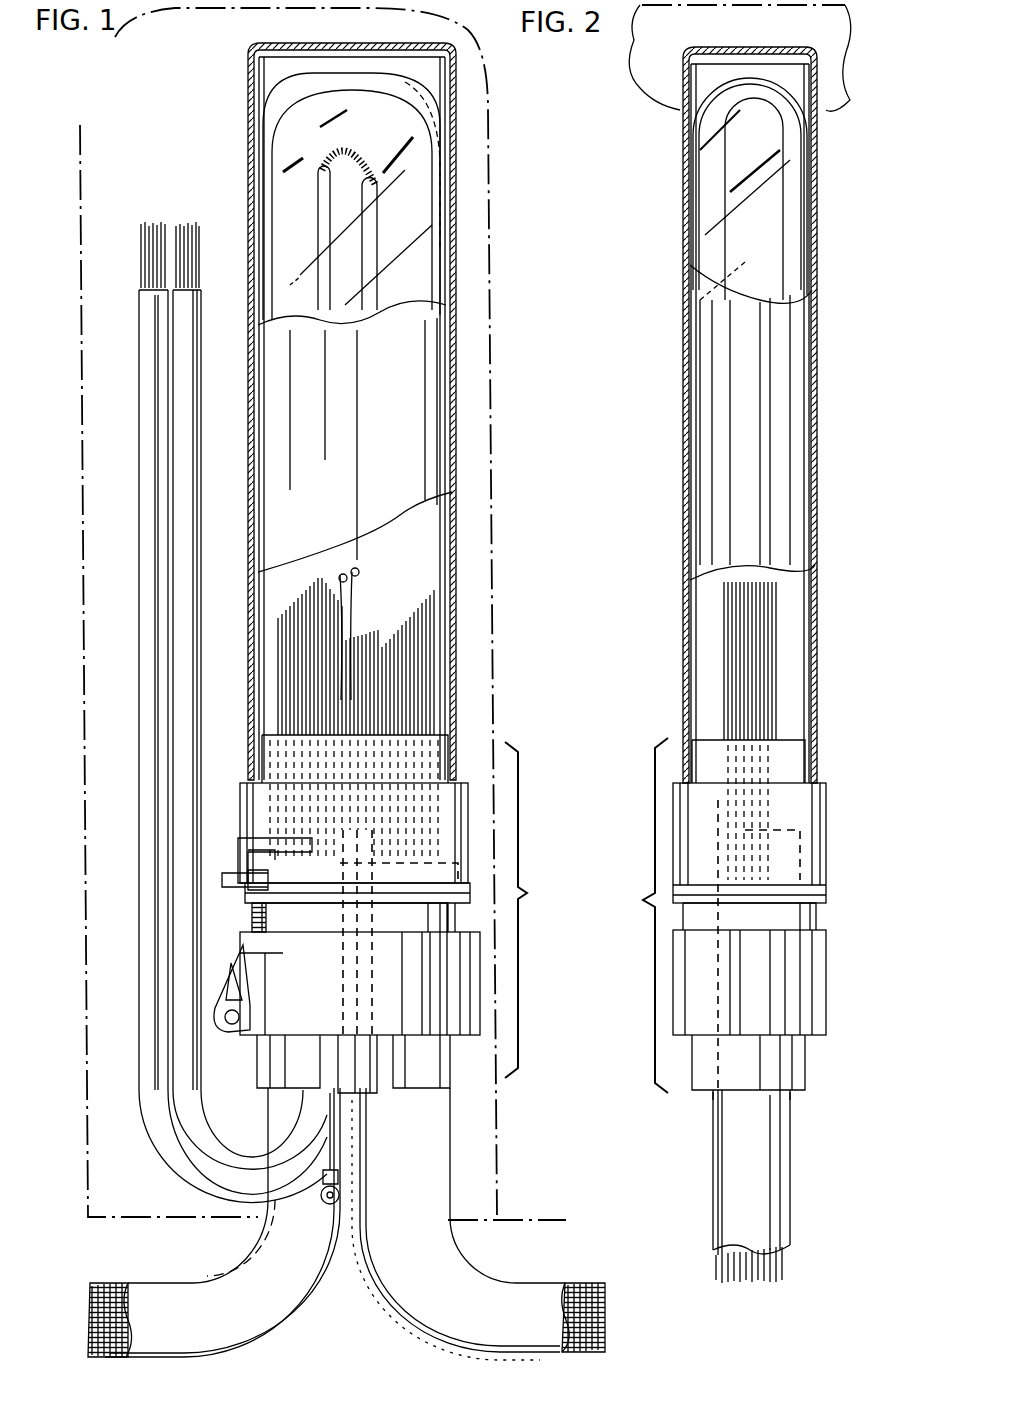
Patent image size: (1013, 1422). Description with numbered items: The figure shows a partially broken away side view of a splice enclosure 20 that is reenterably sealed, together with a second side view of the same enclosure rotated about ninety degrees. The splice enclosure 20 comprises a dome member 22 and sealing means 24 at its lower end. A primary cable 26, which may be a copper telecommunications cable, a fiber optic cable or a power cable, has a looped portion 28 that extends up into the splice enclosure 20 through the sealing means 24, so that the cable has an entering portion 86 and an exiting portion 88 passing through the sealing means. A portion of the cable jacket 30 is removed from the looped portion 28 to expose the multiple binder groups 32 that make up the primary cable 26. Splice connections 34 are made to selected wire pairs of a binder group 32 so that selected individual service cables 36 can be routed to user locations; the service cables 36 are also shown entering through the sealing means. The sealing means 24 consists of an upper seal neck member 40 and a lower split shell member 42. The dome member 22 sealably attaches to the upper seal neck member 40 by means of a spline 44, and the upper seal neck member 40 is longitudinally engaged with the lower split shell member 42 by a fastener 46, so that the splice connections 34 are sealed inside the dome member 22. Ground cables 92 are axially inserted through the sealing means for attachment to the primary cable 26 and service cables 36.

In FIG. 1, the splice enclosure 20 is at (465, 222).
In FIG. 2, the splice enclosure 20 is at (678, 160).
In FIG. 1, the dome member 22 is at (460, 333).
In FIG. 2, the dome member 22 is at (684, 230).
In FIG. 1, the sealing means 24 is at (533, 910).
In FIG. 2, the sealing means 24 is at (635, 915).
In FIG. 1, the primary cable 26 is at (346, 1242).
In FIG. 2, the primary cable 26 is at (808, 1160).
In FIG. 1, the looped portion 28 is at (440, 628).
In FIG. 1, the cable jacket 30 is at (292, 212).
In FIG. 2, the cable jacket 30 is at (726, 820).
In FIG. 1, the binder groups 32 is at (130, 1260).
In FIG. 2, the binder groups 32 is at (730, 688).
In FIG. 1, the splice connections 34 is at (318, 160).
In FIG. 1, the service cables 36 is at (185, 358).
In FIG. 1, the upper seal neck member 40 is at (250, 785).
In FIG. 2, the upper seal neck member 40 is at (822, 834).
In FIG. 1, the lower split shell member 42 is at (246, 1030).
In FIG. 2, the lower split shell member 42 is at (816, 964).
In FIG. 1, the spline 44 is at (240, 840).
In FIG. 1, the fastener 46 is at (266, 922).
In FIG. 1, the entering portion 86 is at (550, 1328).
In FIG. 1, the exiting portion 88 is at (182, 1292).
In FIG. 1, the ground cables 92 is at (327, 1112).